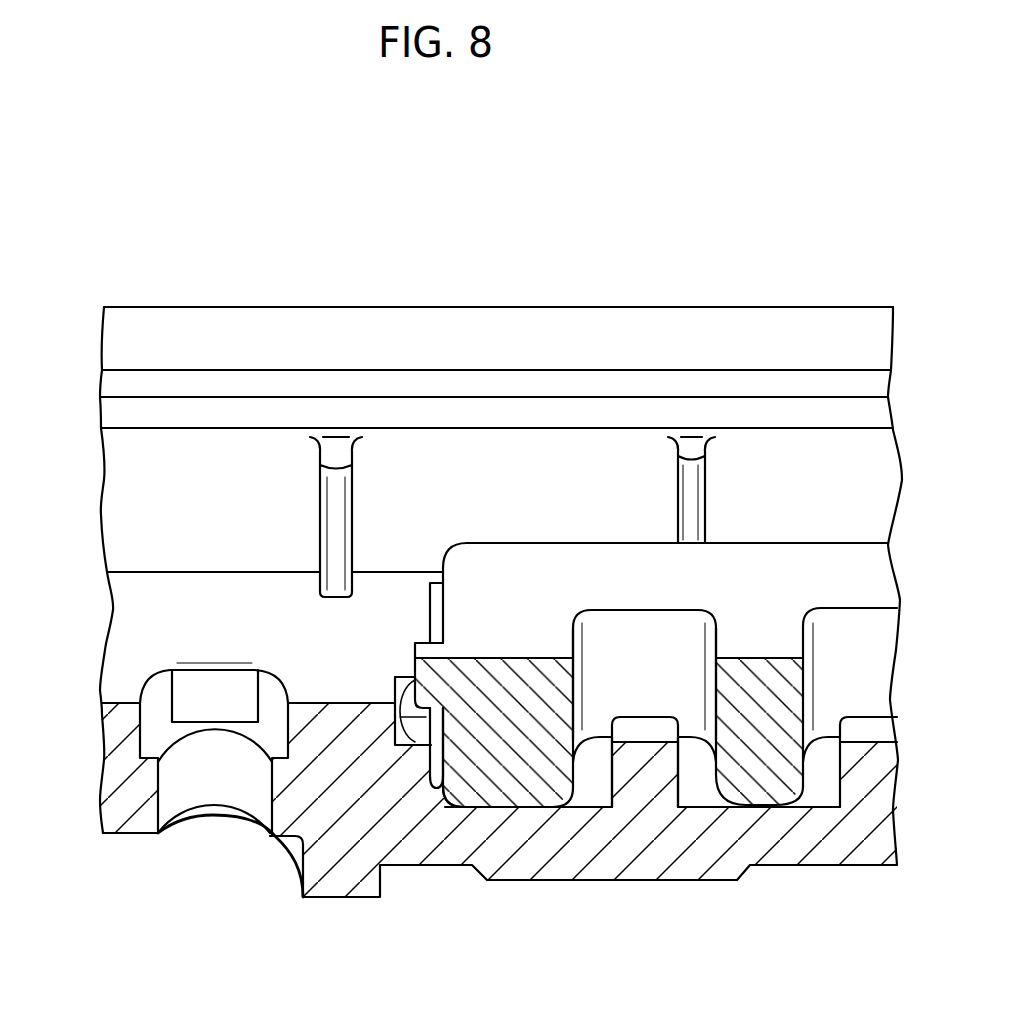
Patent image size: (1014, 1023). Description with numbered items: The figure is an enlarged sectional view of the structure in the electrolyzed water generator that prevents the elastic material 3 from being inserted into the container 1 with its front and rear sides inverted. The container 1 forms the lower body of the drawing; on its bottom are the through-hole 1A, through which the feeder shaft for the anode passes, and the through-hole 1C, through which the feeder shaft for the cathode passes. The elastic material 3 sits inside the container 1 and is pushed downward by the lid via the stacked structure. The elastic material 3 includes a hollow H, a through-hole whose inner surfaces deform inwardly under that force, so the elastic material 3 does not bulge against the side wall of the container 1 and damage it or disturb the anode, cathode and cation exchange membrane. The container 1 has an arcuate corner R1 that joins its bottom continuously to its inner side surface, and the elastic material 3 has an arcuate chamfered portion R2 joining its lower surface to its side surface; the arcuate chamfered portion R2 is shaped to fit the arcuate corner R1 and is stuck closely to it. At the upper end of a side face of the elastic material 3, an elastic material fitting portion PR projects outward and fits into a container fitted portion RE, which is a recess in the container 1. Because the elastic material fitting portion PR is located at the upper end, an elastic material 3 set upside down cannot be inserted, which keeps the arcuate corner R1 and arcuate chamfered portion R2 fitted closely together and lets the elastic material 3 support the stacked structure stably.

The container 1 is at (188, 307).
The through-hole 1A is at (212, 831).
The through-hole 1C is at (230, 856).
The elastic material 3 is at (603, 606).
The hollow H is at (633, 645).
The elastic material fitting portion PR is at (376, 606).
The container fitted portion RE is at (396, 681).
The arcuate corner R1 is at (433, 778).
The arcuate chamfered portion R2 is at (453, 807).